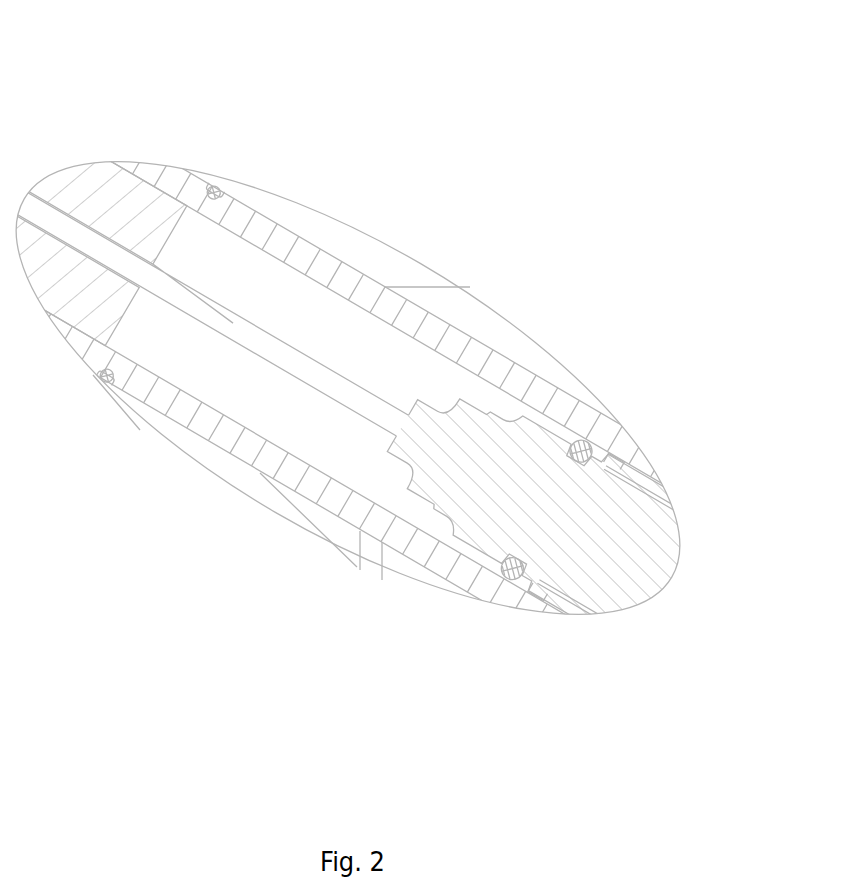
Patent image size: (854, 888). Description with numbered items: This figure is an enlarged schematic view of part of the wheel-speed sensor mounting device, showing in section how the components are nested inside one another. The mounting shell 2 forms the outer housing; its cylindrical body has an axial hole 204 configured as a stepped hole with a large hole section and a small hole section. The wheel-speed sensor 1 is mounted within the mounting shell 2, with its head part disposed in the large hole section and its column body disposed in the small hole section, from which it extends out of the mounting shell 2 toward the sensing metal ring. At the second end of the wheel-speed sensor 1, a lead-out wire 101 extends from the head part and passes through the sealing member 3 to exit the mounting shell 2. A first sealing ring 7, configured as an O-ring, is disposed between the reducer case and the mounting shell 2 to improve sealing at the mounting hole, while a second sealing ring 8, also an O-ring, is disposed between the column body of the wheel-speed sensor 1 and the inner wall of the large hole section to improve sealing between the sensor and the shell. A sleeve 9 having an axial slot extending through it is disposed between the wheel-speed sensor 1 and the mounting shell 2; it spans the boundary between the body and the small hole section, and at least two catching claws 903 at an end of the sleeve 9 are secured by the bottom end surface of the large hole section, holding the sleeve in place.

The wheel-speed sensor 1 is at (600, 557).
The lead-out wire 101 is at (237, 323).
The mounting shell 2 is at (479, 357).
The axial hole 204 is at (270, 295).
The sealing member 3 is at (127, 212).
The first sealing ring 7 is at (216, 186).
The second sealing ring 8 is at (500, 590).
The sleeve 9 is at (588, 607).
The catching claws 903 is at (612, 458).